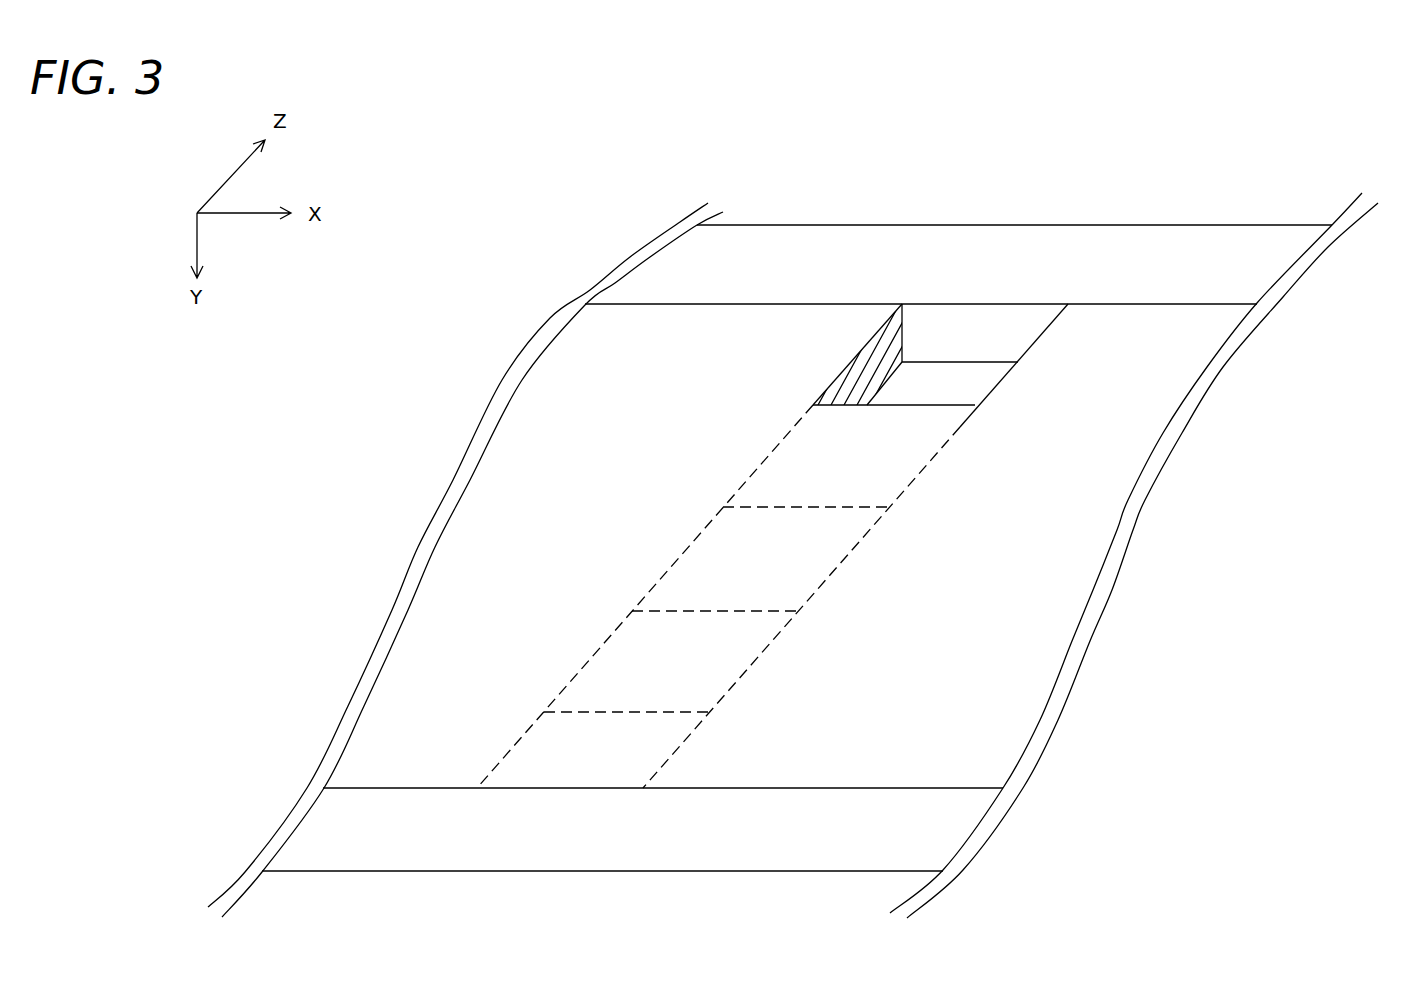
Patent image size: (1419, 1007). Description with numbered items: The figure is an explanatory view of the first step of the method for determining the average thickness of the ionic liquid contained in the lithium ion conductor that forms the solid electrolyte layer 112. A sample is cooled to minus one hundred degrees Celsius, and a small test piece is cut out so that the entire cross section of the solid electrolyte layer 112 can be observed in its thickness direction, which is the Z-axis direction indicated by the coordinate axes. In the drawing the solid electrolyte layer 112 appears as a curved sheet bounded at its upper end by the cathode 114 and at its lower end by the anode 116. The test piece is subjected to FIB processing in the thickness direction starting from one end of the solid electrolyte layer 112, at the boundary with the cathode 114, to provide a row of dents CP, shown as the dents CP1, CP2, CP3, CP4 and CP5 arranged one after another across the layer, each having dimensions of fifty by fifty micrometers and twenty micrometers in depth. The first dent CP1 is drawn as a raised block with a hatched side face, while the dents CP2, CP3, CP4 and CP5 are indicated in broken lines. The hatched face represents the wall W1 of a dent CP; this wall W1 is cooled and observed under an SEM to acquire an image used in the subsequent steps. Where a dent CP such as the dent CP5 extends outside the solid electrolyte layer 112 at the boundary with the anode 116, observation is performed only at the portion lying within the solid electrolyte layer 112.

The solid electrolyte layer 112 is at (1068, 577).
The cathode 114 is at (1275, 265).
The anode 116 is at (910, 825).
The wall W1 is at (878, 366).
The dent CP is at (830, 546).
The dent CP1 is at (965, 383).
The dent CP2 is at (890, 463).
The dent CP3 is at (820, 548).
The dent CP4 is at (745, 646).
The dent CP5 is at (655, 745).